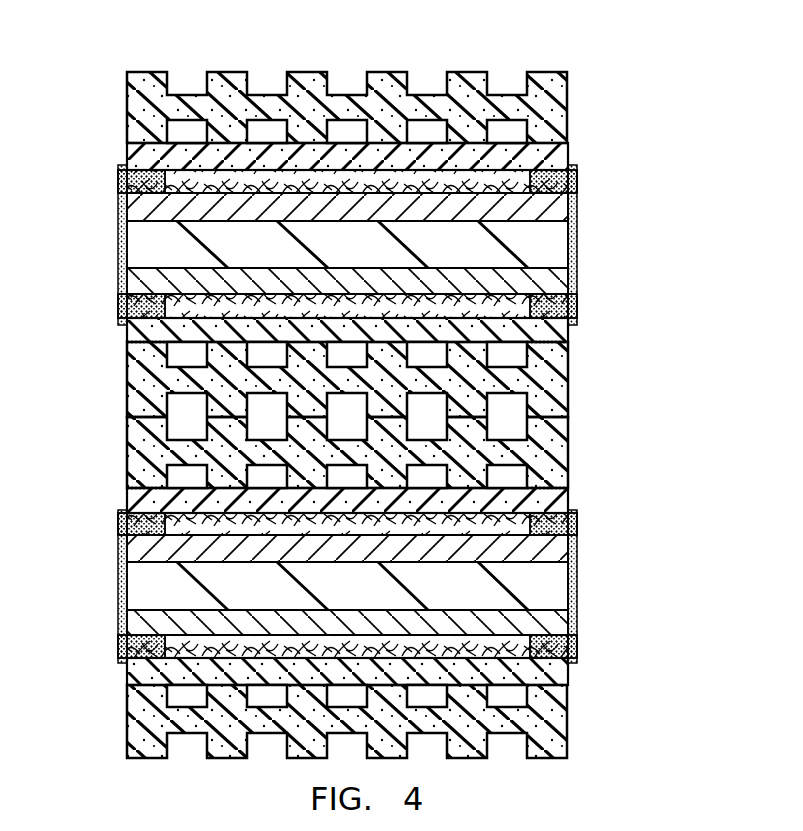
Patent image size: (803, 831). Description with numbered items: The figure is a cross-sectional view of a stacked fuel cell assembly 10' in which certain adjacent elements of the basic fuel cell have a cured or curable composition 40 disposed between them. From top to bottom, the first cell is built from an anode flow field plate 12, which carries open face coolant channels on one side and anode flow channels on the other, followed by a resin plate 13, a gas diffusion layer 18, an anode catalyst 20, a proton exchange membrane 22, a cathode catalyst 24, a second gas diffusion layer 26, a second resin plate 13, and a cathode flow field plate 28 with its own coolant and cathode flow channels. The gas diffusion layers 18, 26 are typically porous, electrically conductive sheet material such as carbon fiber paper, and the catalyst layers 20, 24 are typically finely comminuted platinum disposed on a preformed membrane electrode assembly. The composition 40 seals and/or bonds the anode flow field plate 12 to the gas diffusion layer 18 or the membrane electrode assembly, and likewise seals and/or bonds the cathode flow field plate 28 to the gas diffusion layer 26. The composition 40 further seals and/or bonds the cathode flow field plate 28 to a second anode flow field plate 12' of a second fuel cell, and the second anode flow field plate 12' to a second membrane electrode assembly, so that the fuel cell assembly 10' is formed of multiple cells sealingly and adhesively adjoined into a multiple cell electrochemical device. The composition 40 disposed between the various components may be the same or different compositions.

The fuel cell assembly 10' is at (392, 383).
The anode flow field plate 12 is at (311, 106).
The second anode flow field plate 12' is at (310, 415).
The resin plate 13 is at (127, 157).
The gas diffusion layer 18 is at (130, 178).
The anode catalyst 20 is at (150, 206).
The proton exchange membrane 22 is at (145, 243).
The cathode catalyst 24 is at (135, 279).
The second gas diffusion layer 26 is at (135, 304).
The cathode flow field plate 28 is at (127, 378).
The cured or curable composition 40 is at (577, 173).